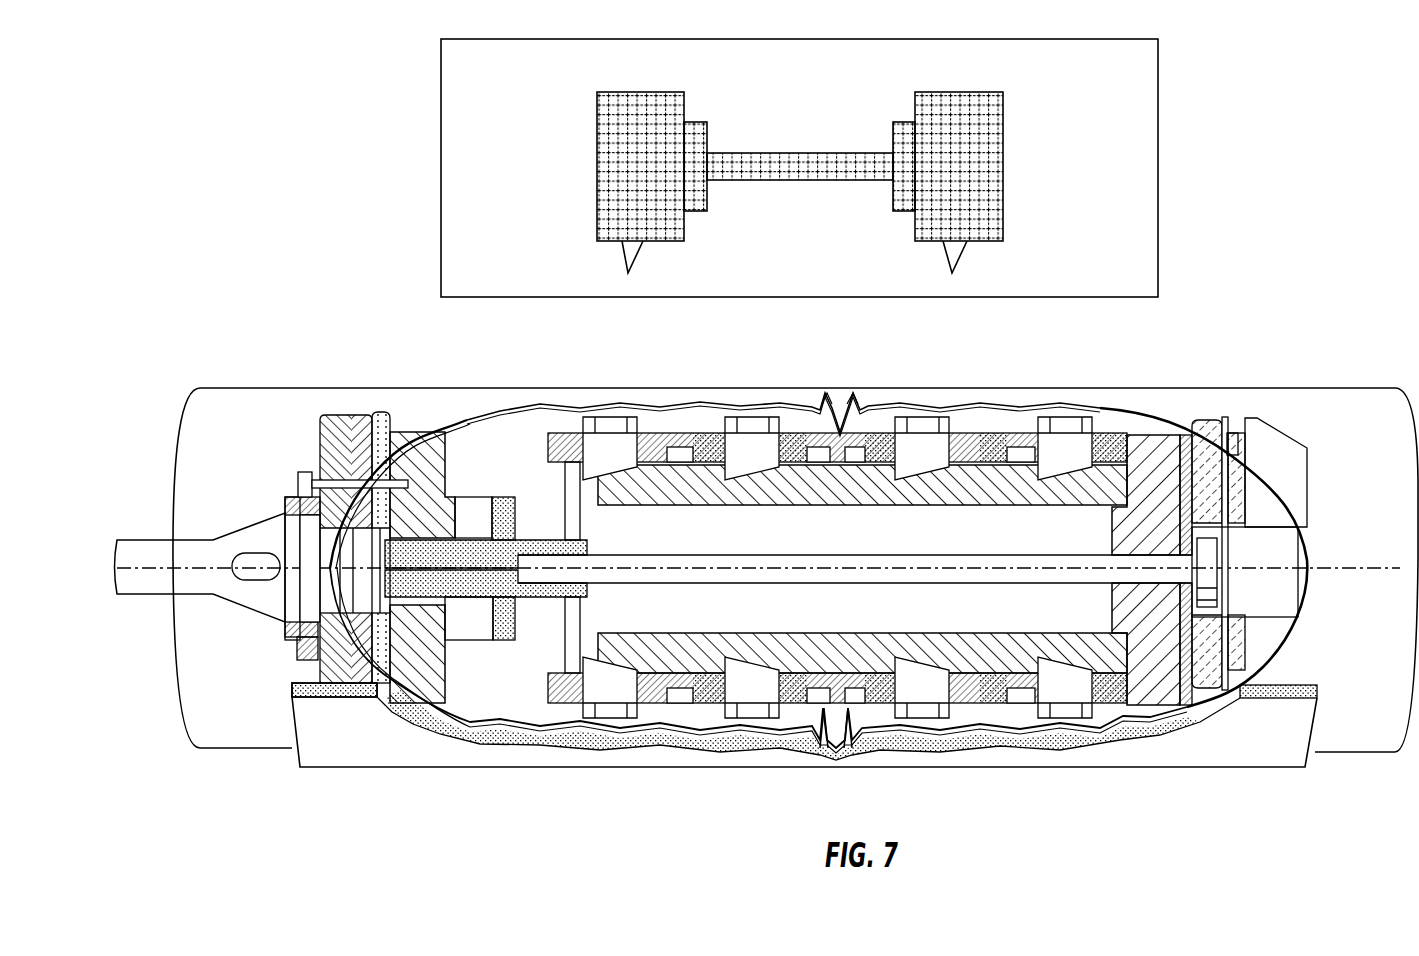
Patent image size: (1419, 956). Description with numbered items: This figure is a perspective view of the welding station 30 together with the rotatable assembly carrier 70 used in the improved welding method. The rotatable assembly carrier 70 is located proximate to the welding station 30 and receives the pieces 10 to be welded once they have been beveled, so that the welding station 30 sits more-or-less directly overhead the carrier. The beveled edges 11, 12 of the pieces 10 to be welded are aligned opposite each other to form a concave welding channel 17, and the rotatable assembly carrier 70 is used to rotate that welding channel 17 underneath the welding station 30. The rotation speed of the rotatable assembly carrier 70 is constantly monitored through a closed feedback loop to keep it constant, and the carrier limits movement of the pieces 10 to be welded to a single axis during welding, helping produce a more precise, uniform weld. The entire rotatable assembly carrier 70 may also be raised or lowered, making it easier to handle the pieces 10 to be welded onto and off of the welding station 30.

The pieces to be welded 10 is at (387, 392).
The beveled edge 11 is at (553, 755).
The beveled edge 12 is at (1120, 723).
The welding channel 17 is at (835, 740).
The welding station 30 is at (438, 245).
The rotatable assembly carrier 70 is at (397, 768).